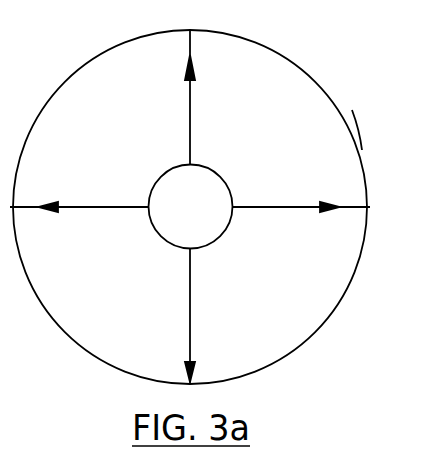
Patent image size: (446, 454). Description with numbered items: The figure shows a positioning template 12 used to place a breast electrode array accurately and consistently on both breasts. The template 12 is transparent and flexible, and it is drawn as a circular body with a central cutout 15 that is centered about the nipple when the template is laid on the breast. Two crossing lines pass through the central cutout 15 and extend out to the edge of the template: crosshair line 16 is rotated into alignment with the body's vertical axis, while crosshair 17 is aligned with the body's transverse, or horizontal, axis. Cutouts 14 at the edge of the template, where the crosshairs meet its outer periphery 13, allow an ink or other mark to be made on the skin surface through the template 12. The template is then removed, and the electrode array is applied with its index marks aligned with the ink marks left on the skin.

The positioning template 12 is at (322, 64).
The outer periphery 13 is at (335, 142).
The cutouts 14 is at (190, 52).
The central cutout 15 is at (207, 217).
The crosshair line 16 is at (190, 349).
The crosshair 17 is at (348, 209).